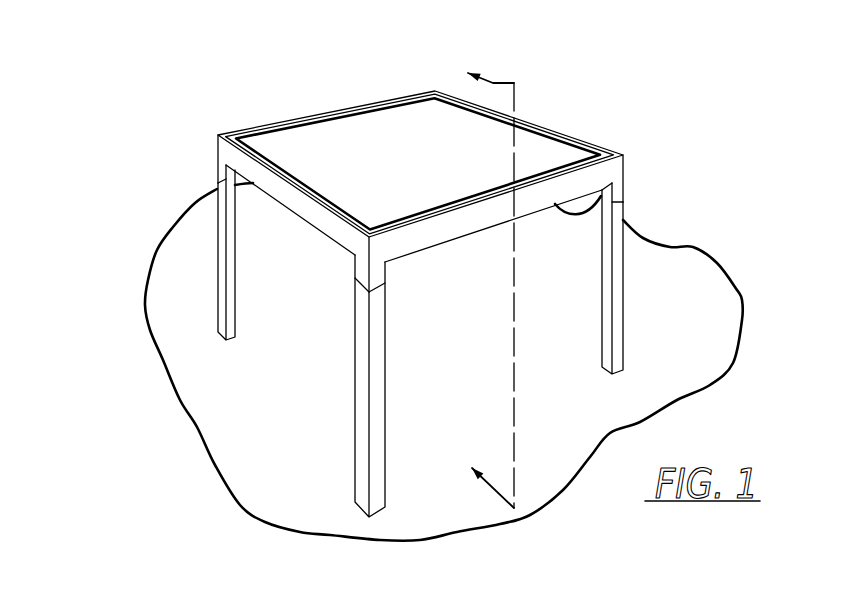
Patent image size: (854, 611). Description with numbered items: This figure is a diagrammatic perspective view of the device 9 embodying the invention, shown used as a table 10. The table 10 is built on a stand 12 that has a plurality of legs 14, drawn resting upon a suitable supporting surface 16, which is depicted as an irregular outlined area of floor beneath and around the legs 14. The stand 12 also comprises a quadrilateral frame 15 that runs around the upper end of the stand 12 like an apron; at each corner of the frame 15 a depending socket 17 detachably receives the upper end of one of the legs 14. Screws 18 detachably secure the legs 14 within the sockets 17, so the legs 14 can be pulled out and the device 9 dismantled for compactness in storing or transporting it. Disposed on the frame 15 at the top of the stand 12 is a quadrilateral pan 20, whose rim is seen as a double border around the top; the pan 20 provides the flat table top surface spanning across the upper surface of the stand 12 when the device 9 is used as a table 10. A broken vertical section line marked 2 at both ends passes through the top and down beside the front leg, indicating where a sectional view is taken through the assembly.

The device 9 is at (143, 160).
The table 10 is at (407, 85).
The stand 12 is at (290, 212).
The legs 14 is at (233, 318).
The quadrilateral frame 15 is at (332, 229).
The supporting surface 16 is at (277, 410).
The sockets 17 is at (222, 172).
The screws 18 is at (599, 194).
The quadrilateral pan 20 is at (414, 161).
The section line 2- 2 is at (491, 278).